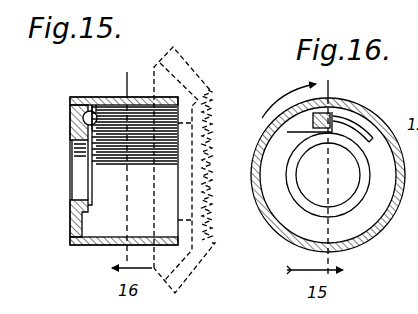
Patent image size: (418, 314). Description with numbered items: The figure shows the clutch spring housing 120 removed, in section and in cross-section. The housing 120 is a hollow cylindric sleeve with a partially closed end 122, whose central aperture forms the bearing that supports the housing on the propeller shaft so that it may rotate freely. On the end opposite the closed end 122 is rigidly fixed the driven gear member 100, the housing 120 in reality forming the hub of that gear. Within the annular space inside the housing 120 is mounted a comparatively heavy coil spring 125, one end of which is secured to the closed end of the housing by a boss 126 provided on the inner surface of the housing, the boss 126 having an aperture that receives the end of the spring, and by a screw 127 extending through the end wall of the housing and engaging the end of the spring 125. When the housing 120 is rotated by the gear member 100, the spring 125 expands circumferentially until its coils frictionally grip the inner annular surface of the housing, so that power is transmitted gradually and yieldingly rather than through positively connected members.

In FIG. 15, the driven gear member 100 is at (193, 73).
In FIG. 15, the housing 120 is at (106, 247).
In FIG. 16, the housing 120 is at (273, 220).
In FIG. 15, the partially closed end 122 is at (70, 220).
In FIG. 16, the coil spring 125 is at (362, 123).
In FIG. 15, the boss 126 is at (94, 124).
In FIG. 16, the boss 126 is at (307, 128).
In FIG. 15, the screw 127 is at (80, 118).